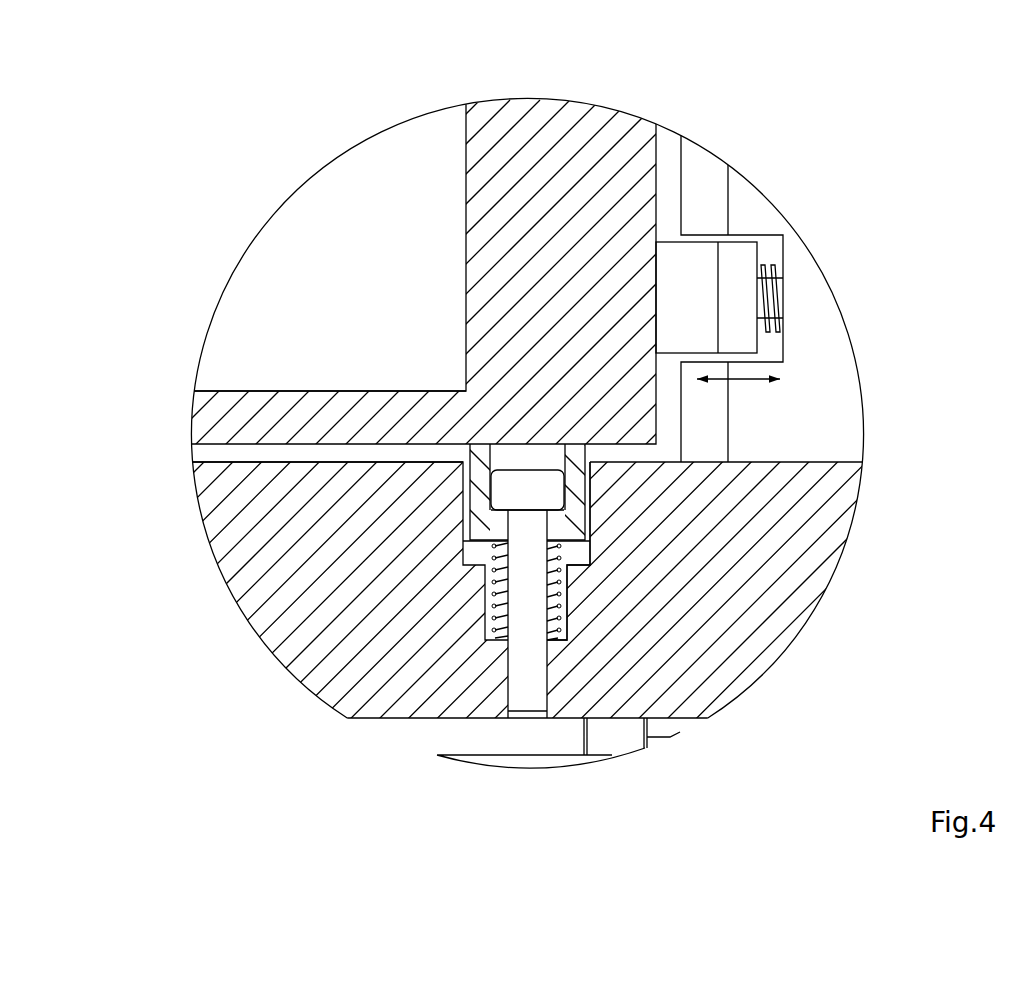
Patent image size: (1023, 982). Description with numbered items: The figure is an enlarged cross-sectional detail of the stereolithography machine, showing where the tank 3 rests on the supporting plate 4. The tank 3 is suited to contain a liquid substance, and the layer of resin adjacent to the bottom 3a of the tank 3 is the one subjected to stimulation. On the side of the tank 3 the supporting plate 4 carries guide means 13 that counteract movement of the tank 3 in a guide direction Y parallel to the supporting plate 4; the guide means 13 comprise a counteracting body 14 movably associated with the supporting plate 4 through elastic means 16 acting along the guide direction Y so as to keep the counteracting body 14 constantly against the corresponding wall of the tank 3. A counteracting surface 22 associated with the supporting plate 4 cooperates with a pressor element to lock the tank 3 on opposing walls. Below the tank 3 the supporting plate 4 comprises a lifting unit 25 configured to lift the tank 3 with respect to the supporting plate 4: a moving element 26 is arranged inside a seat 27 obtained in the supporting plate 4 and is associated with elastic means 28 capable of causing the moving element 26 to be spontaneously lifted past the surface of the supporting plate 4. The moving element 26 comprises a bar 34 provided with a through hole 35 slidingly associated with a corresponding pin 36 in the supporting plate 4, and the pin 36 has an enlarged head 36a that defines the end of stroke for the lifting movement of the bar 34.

The tank 3 is at (586, 153).
The bottom of the tank 3a is at (262, 386).
The supporting plate 4 is at (265, 557).
The guide means 13 is at (800, 292).
The counteracting body 14 is at (700, 263).
The elastic means 16 is at (777, 327).
The counteracting surface 22 is at (247, 465).
The lifting unit 25 is at (612, 555).
The moving element 26 is at (588, 523).
The seat 27 is at (472, 572).
The elastic means 28 is at (500, 619).
The bar 34 is at (580, 503).
The through hole 35 is at (503, 523).
The pin 36 is at (530, 685).
The enlarged head 36a is at (537, 498).
The guide direction Y is at (738, 379).